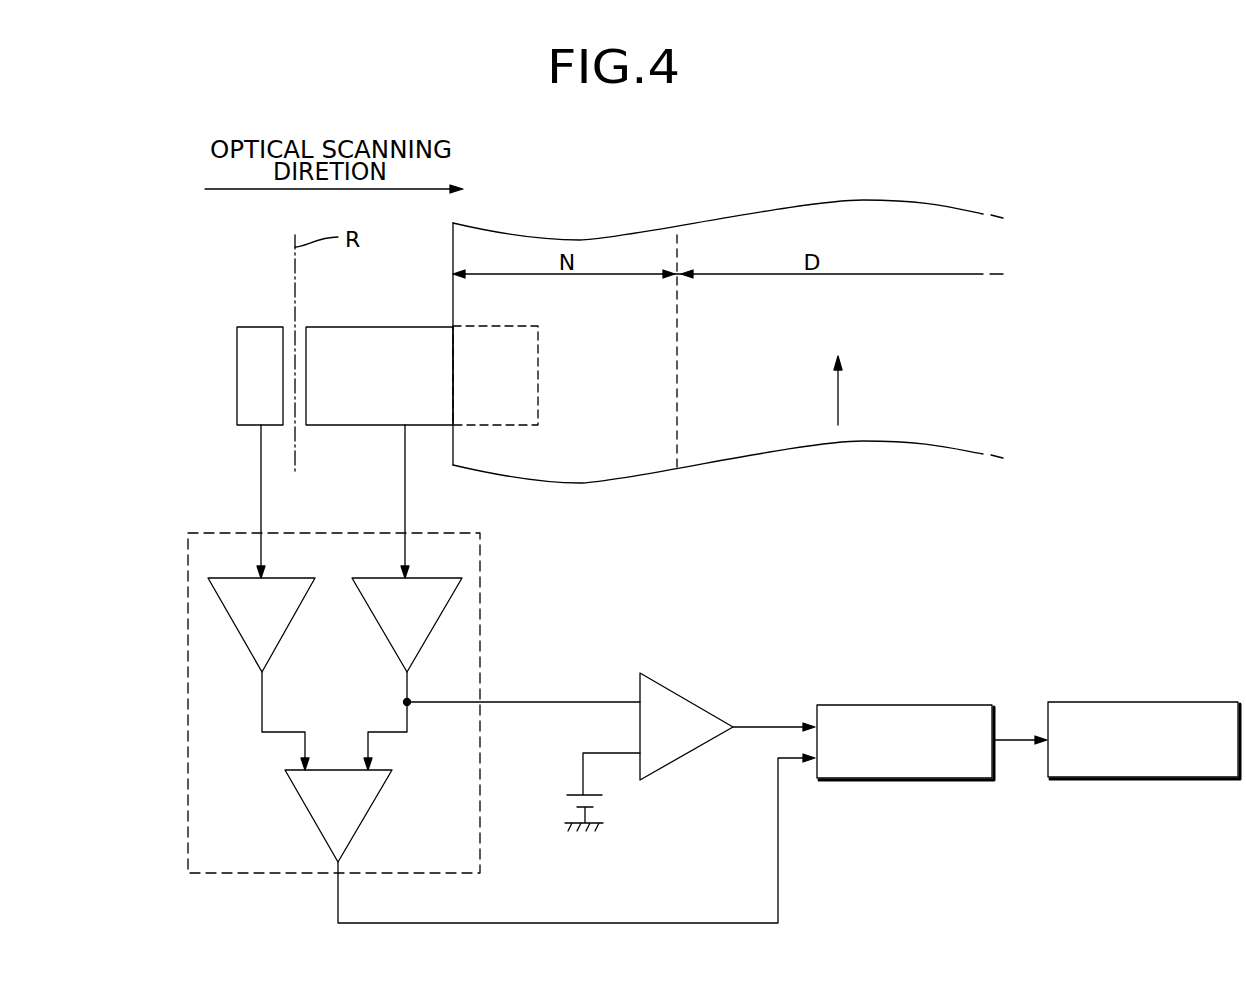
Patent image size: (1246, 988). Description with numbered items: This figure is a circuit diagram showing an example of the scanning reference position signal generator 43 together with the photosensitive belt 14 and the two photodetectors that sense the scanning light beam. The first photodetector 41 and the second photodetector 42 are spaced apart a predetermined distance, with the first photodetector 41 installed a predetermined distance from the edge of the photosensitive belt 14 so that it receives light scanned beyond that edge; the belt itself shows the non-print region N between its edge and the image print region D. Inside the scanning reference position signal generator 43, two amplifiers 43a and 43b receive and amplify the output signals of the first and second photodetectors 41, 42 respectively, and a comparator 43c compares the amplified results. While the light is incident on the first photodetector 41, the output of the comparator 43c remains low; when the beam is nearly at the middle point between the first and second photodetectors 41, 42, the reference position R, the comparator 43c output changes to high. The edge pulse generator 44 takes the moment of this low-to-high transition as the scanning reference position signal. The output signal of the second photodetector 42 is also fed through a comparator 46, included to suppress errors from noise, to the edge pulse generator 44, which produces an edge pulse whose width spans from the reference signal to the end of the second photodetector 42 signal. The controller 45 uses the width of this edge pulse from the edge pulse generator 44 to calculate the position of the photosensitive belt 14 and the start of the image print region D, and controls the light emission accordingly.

The photosensitive belt 14 is at (728, 220).
The first photodetector 41 is at (261, 326).
The second photodetector 42 is at (381, 326).
The scanning reference position signal generator 43 is at (480, 573).
The amplifier 43a is at (228, 625).
The amplifier 43b is at (435, 625).
The comparator 43c is at (325, 843).
The edge pulse generator 44 is at (898, 780).
The controller 45 is at (1103, 780).
The comparator 46 is at (692, 702).